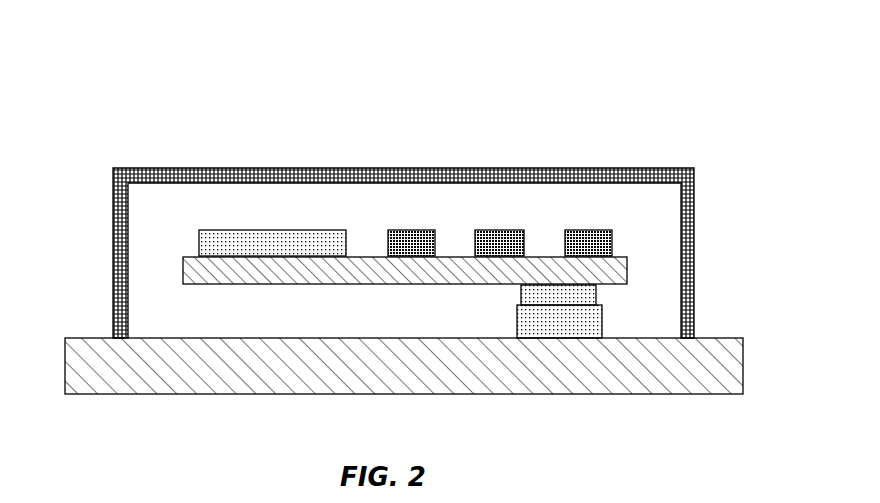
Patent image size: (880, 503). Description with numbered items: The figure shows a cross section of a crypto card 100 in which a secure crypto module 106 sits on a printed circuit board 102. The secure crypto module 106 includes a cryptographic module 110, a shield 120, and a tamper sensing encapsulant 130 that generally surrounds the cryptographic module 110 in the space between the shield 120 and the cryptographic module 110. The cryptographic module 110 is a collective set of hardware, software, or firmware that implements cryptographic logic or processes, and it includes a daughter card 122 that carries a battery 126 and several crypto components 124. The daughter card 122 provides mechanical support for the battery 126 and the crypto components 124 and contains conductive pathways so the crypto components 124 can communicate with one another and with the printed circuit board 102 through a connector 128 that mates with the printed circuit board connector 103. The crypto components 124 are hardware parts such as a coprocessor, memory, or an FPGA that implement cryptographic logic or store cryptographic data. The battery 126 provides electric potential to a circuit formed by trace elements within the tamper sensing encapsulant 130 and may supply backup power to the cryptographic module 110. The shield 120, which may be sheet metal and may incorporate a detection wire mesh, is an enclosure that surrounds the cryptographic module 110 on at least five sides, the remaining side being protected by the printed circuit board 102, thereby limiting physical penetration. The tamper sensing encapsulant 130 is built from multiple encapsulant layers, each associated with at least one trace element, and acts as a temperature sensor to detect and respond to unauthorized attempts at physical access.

The crypto card 100 is at (679, 86).
The printed circuit board 102 is at (725, 362).
The printed circuit board connector 103 is at (540, 330).
The secure crypto module 106 is at (107, 153).
The cryptographic module 110 is at (698, 143).
The shield 120 is at (695, 213).
The daughter card 122 is at (610, 268).
The crypto components 124 is at (406, 238).
The battery 126 is at (296, 245).
The connector 128 is at (578, 298).
The tamper sensing encapsulant 130 is at (170, 222).